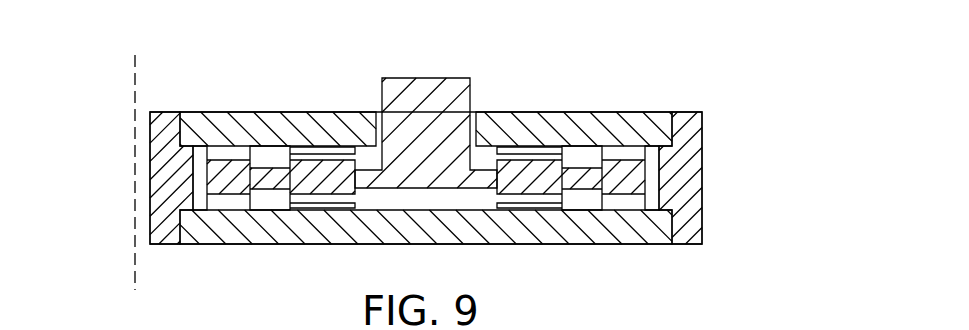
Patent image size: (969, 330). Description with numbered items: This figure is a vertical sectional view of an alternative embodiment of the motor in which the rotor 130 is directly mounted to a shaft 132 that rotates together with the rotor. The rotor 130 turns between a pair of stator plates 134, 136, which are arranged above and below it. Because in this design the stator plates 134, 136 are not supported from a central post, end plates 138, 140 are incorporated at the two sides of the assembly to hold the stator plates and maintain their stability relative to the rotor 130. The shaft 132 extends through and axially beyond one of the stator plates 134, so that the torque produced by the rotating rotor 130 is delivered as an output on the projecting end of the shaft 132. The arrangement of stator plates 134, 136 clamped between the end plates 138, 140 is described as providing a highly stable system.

The rotor 130 is at (619, 176).
The shaft 132 is at (415, 95).
The stator plate 134 is at (597, 113).
The stator plate 136 is at (608, 225).
The end plate 138 is at (149, 160).
The end plate 140 is at (703, 170).